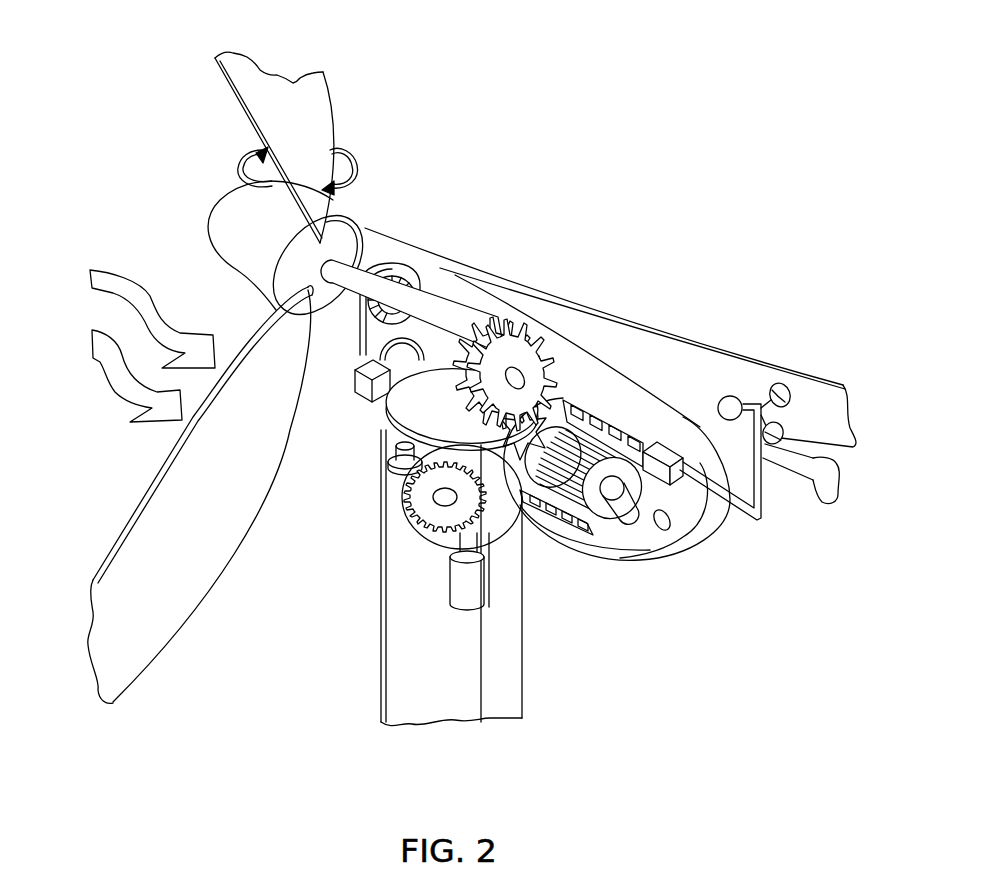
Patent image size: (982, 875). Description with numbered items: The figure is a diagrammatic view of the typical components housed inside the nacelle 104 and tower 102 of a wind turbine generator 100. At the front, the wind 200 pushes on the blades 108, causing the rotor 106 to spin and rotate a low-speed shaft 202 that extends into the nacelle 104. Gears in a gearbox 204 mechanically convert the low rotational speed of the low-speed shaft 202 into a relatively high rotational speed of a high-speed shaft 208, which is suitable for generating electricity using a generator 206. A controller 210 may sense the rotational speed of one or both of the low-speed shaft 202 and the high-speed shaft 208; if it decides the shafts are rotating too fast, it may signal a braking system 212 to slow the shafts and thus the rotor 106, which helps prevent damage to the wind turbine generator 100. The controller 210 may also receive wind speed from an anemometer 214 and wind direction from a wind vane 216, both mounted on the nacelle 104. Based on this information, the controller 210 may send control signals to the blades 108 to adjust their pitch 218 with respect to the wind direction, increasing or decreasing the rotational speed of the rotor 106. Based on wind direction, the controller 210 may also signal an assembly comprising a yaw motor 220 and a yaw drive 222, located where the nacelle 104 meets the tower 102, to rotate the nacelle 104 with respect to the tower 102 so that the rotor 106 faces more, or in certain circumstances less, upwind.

The wind turbine generator 100 is at (455, 369).
The tower 102 is at (405, 662).
The nacelle 104 is at (708, 543).
The rotor 106 is at (472, 377).
The blades 108 is at (258, 100).
The wind 200 is at (112, 283).
The low-speed shaft 202 is at (425, 320).
The gearbox 204 is at (503, 318).
The generator 206 is at (579, 440).
The high-speed shaft 208 is at (628, 502).
The controller 210 is at (670, 443).
The braking system 212 is at (352, 375).
The anemometer 214 is at (783, 395).
The wind vane 216 is at (830, 483).
The pitch 218 is at (240, 167).
The yaw motor 220 is at (455, 578).
The yaw drive 222 is at (377, 465).